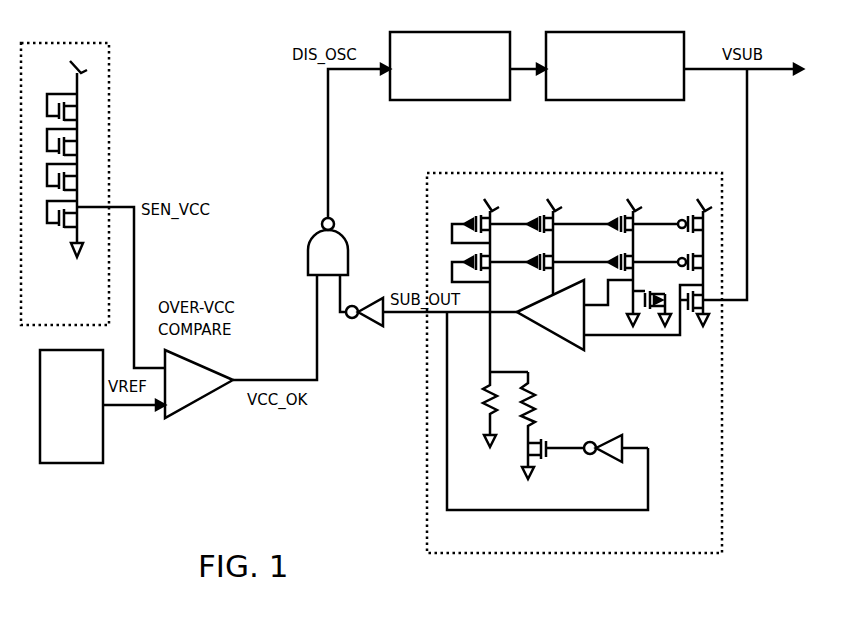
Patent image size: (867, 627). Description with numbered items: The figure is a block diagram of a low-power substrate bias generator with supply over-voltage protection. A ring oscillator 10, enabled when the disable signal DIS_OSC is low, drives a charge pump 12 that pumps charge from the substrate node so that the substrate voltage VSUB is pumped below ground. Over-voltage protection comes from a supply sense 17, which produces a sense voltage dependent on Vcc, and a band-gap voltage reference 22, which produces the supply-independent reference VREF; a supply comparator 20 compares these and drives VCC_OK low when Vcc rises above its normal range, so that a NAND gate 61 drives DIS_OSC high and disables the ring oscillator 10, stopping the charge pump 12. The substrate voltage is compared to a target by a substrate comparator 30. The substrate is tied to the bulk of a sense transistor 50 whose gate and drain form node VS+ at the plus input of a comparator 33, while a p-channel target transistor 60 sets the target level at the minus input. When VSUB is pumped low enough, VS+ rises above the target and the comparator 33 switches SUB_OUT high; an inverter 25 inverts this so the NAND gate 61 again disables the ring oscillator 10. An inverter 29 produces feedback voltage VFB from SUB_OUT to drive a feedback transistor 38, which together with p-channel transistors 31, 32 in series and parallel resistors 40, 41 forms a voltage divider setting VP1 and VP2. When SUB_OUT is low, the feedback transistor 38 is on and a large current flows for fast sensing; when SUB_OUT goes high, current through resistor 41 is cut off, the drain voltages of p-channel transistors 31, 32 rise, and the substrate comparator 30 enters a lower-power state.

The ring oscillator 10 is at (450, 66).
The charge pump 12 is at (615, 66).
The supply sense 17 is at (65, 184).
The supply comparator 20 is at (199, 384).
The band-gap voltage reference 22 is at (71, 406).
The inverter 25 is at (358, 320).
The inverter 29 is at (600, 457).
The substrate comparator 30 is at (574, 363).
The p-channel transistor 31 is at (497, 214).
The p-channel transistor 32 is at (497, 271).
The comparator 33 is at (550, 315).
The feedback transistor 38 is at (529, 447).
The resistor 40 is at (483, 414).
The resistor 41 is at (538, 403).
The sense transistor 50 is at (688, 317).
The target transistor 60 is at (635, 298).
The NAND gate 61 is at (328, 246).